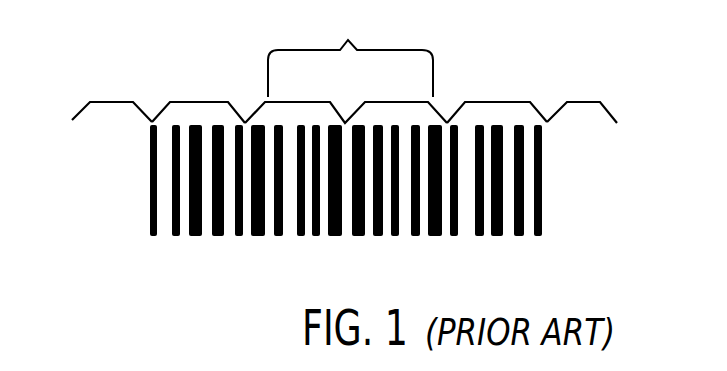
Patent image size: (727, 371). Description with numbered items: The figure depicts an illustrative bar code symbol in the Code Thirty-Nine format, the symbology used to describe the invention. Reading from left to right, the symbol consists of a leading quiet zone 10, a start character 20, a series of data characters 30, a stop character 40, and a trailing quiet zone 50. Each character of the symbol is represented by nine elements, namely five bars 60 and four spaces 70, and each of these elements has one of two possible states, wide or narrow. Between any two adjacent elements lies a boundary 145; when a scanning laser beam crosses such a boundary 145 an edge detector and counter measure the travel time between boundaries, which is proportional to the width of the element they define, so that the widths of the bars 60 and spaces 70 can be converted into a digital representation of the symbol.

The leading quiet zone 10 is at (82, 108).
The start character 20 is at (228, 102).
The data characters 30 is at (346, 152).
The stop character 40 is at (531, 100).
The trailing quiet zone 50 is at (610, 108).
The bars 60 is at (278, 237).
The boundary 145 is at (281, 177).
The spaces 70 is at (467, 237).